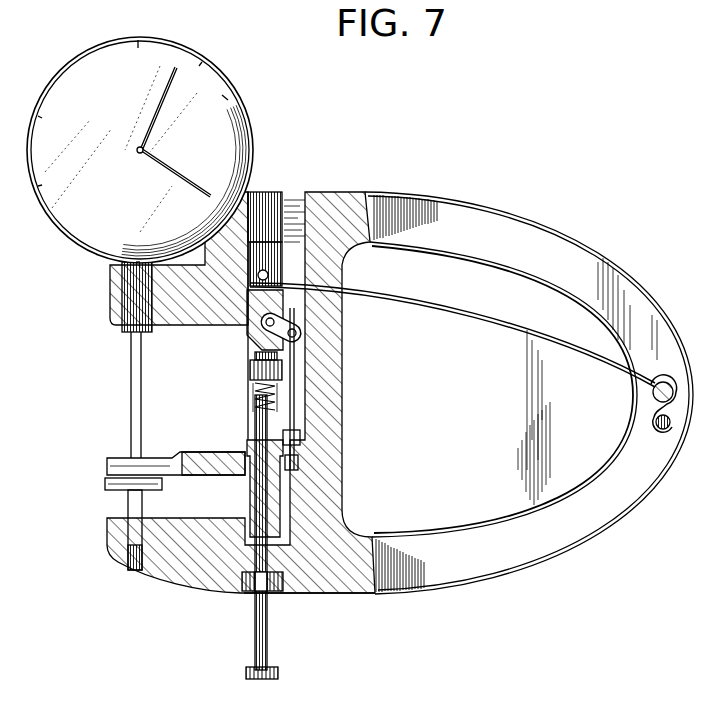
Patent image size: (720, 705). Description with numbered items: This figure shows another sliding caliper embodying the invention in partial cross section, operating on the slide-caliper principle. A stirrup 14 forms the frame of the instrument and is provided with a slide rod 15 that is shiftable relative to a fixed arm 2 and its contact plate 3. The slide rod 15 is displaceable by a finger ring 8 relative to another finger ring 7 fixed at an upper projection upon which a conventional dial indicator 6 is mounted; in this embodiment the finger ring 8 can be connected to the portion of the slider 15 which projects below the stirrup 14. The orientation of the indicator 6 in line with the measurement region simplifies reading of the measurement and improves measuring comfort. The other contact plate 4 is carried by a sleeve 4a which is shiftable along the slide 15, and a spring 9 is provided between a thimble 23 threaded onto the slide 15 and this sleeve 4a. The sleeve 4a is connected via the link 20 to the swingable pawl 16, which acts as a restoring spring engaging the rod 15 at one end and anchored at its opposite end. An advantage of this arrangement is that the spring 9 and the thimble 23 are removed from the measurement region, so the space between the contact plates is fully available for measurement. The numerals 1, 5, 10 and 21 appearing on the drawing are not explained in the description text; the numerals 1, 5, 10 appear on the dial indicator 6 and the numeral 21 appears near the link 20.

The dial pointer mark 1 is at (199, 66).
The fixed arm 2 is at (188, 558).
The contact plate 3 is at (114, 481).
The contact plate 4 is at (116, 458).
The sleeve 4a is at (290, 492).
The dial scale mark 5 is at (138, 262).
The dial indicator 6 is at (230, 90).
The finger ring 7 is at (42, 185).
The finger ring 8 is at (42, 117).
The spring 9 is at (252, 403).
The dial scale mark 10 is at (138, 48).
The stirrup 14 is at (333, 200).
The slide rod 15 is at (266, 628).
The restoring spring 16 is at (474, 316).
The link rod 20 is at (294, 392).
The lever 21 is at (300, 332).
The thimble 23 is at (250, 368).